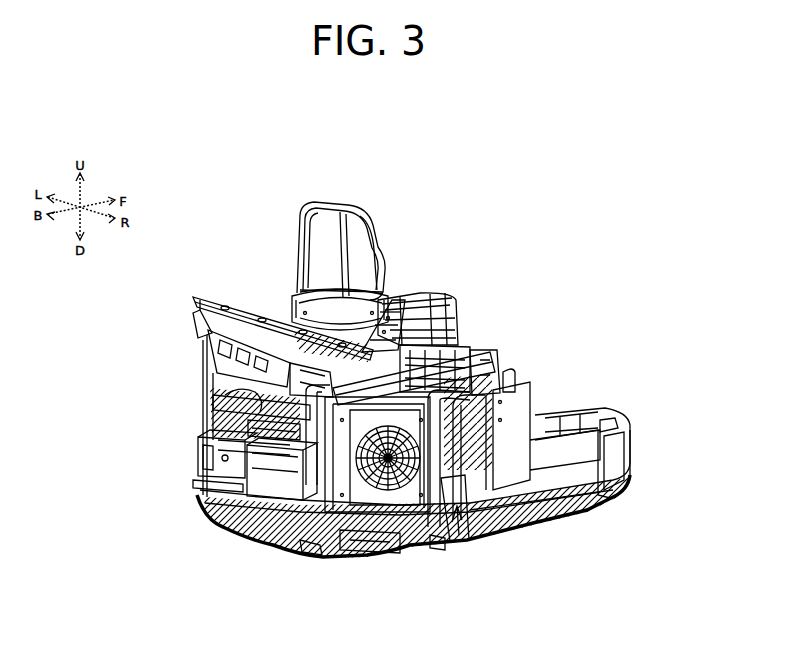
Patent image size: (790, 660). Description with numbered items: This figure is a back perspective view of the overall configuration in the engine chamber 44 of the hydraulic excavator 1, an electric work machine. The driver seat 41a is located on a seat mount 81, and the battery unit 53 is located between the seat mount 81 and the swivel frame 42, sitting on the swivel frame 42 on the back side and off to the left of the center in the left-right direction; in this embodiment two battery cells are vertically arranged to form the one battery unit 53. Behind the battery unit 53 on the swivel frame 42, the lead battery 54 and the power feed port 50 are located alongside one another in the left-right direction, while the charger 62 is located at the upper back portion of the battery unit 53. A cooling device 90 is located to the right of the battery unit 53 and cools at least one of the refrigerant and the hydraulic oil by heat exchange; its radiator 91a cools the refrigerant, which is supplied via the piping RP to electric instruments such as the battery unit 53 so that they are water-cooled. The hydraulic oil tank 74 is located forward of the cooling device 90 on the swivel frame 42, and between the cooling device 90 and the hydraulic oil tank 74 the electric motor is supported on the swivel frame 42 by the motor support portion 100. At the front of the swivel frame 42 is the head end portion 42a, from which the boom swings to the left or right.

The hydraulic excavator 1 is at (662, 208).
The driver seat 41a is at (318, 243).
The radiator 91a is at (372, 338).
The seat mount 81 is at (470, 352).
The hydraulic oil tank 74 is at (515, 430).
The head end portion 42a is at (612, 425).
The swivel frame 42 is at (505, 545).
The engine chamber 44 is at (125, 345).
The charger 62 is at (222, 352).
The battery unit 53 is at (250, 428).
The power feed port 50 is at (195, 463).
The lead battery 54 is at (262, 483).
The piping RP is at (308, 555).
The cooling device 90 is at (371, 556).
The motor support portion 100 is at (473, 548).